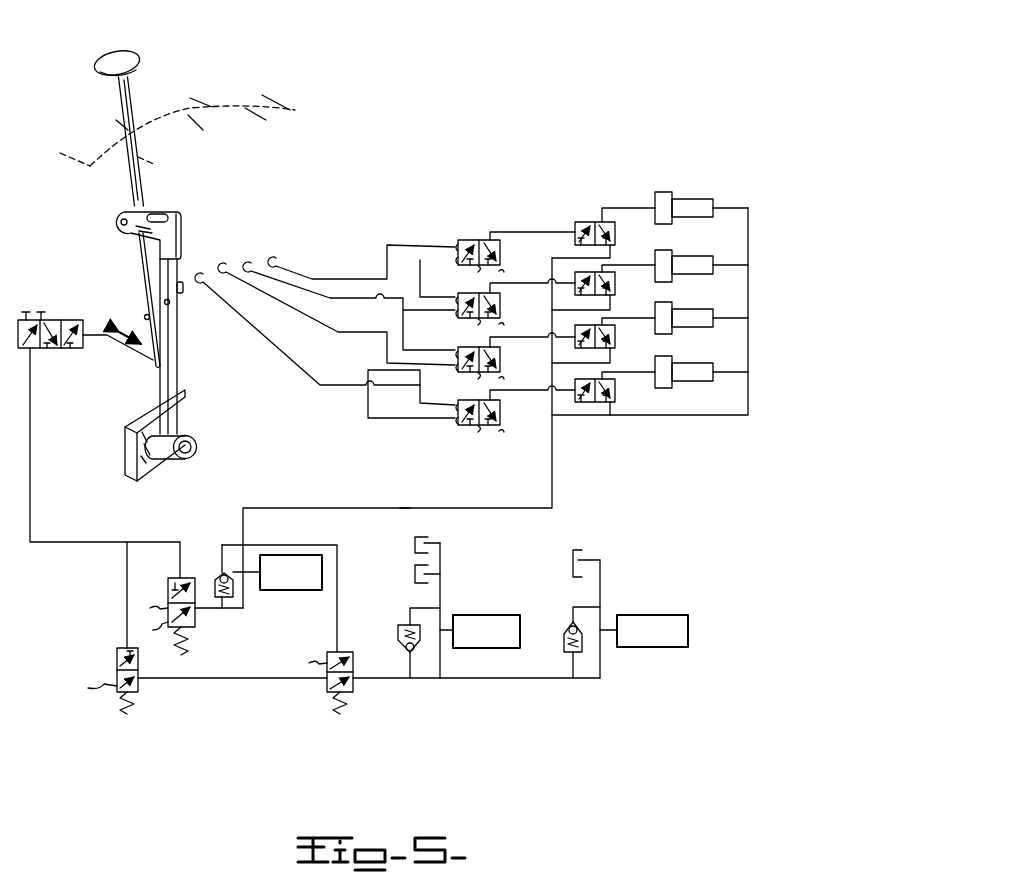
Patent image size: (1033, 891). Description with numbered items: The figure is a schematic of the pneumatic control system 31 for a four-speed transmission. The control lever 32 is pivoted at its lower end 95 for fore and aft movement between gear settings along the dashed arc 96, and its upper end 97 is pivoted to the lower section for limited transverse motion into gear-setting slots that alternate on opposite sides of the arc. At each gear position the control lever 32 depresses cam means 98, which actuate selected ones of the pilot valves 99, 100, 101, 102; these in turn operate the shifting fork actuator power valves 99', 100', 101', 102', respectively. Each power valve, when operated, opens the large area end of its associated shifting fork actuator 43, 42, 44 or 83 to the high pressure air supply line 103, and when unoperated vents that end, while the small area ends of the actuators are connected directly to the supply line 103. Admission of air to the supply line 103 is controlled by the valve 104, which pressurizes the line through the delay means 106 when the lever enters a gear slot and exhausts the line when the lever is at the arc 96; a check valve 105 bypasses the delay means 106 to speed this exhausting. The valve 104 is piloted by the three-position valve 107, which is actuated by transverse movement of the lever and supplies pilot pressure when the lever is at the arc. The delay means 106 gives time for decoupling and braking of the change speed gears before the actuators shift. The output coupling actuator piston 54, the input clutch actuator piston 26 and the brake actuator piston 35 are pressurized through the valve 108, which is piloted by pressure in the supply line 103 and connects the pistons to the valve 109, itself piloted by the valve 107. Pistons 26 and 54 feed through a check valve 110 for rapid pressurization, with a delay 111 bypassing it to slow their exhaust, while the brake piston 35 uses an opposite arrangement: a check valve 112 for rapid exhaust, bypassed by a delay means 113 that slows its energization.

The pneumatic control system 31 is at (562, 155).
The control lever 32 is at (154, 66).
The dashed arc 96 is at (295, 110).
The upper end of the control lever 97 is at (144, 183).
The cam means 98 is at (250, 262).
The lower end of the control lever 95 is at (197, 447).
The three-position valve 107 is at (50, 320).
The pilot valve 99 is at (503, 240).
The pilot valve 100 is at (497, 300).
The pilot valve 101 is at (499, 356).
The pilot valve 102 is at (492, 418).
The shifting fork actuator power valve 99' is at (597, 222).
The shifting fork actuator power valve 100' is at (607, 276).
The shifting fork actuator power valve 101' is at (608, 329).
The shifting fork actuator power valve 102' is at (614, 412).
The shifting fork actuator 43 is at (683, 193).
The shifting fork actuator 42 is at (683, 252).
The shifting fork actuator 44 is at (683, 304).
The shifting fork actuator 83 is at (683, 357).
The high pressure air supply line 103 is at (402, 506).
The valve 104 is at (181, 578).
The check valve 105 is at (222, 573).
The delay means 106 is at (278, 590).
The valve 109 is at (117, 655).
The valve 108 is at (337, 652).
The output coupling actuator piston 54 is at (418, 537).
The throughdrive clutch and input clutch actuator piston 26 is at (415, 572).
The brake actuator piston 35 is at (573, 548).
The check valve 110 is at (398, 630).
The delay 111 is at (469, 615).
The check valve 112 is at (562, 645).
The delay means 113 is at (650, 615).